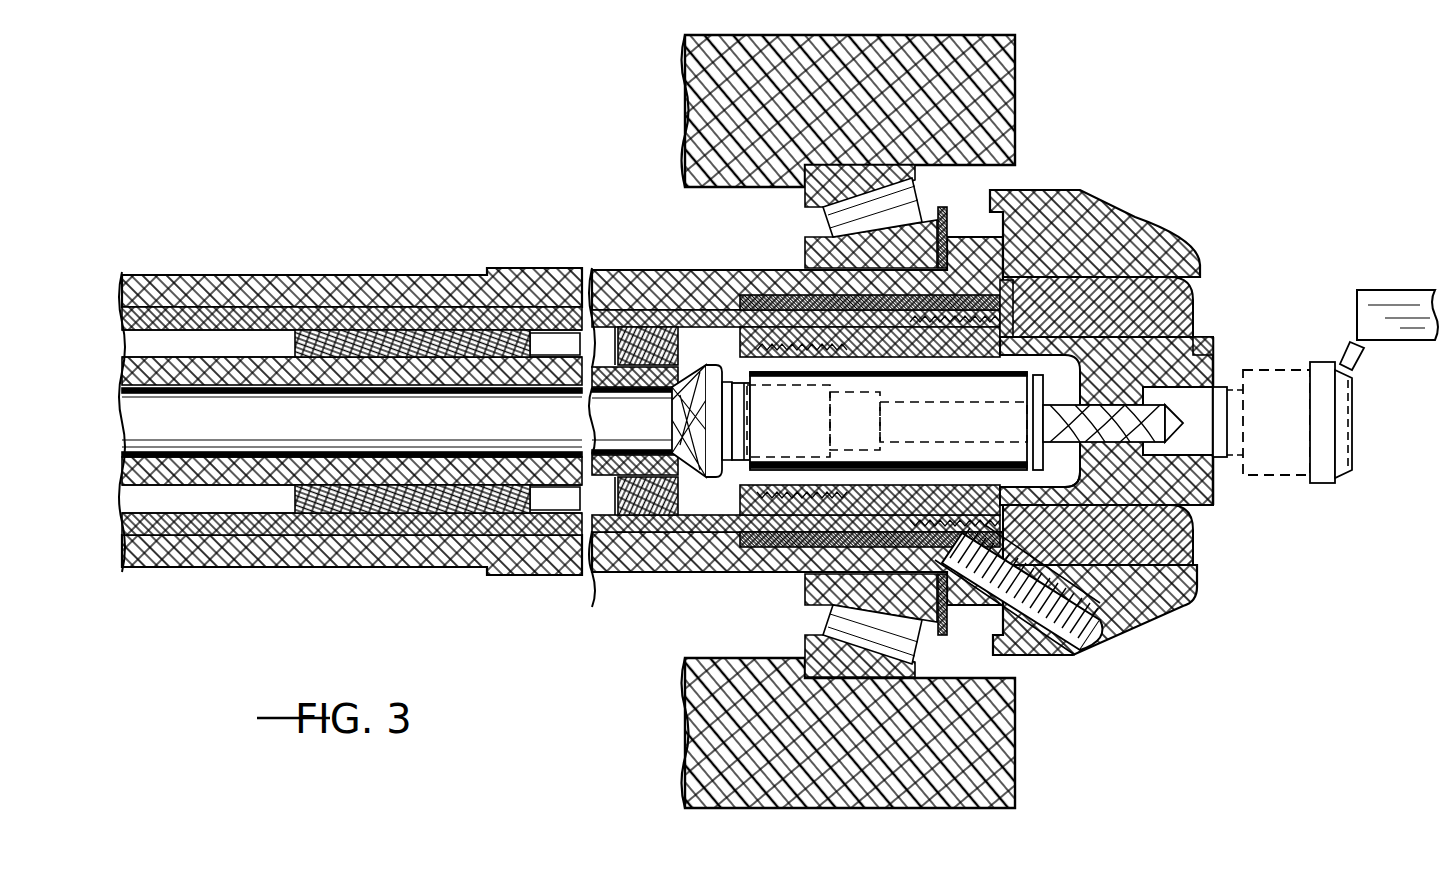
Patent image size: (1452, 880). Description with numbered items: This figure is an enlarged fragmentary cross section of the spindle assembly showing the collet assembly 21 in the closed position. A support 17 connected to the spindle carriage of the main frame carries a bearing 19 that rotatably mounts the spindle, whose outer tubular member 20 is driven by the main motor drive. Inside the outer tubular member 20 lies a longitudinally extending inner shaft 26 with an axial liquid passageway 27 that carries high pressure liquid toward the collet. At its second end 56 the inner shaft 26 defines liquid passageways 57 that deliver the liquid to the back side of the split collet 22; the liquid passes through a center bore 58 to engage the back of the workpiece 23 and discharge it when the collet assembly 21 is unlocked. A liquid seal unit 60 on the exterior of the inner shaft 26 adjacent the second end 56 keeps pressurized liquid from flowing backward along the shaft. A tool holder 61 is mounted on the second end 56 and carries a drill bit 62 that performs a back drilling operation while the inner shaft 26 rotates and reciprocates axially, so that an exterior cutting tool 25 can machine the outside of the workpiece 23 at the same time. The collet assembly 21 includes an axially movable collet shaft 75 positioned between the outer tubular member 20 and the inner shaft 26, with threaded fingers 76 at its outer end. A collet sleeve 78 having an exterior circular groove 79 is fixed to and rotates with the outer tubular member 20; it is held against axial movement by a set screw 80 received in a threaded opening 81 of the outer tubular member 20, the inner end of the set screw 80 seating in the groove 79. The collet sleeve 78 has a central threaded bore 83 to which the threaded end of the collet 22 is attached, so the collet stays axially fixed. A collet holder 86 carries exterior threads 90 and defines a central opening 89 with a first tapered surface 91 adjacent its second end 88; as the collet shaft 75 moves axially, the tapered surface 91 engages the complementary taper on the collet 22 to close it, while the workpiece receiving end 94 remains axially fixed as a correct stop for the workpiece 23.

The support 17 is at (1017, 48).
The bearing 19 is at (805, 203).
The outer tubular member 20 is at (680, 268).
The collet assembly 21 is at (1148, 275).
The split collet 22 is at (1222, 345).
The workpiece 23 is at (1298, 478).
The exterior cutting tool 25 is at (1343, 345).
The inner shaft 26 is at (423, 395).
The axial liquid passageway 27 is at (225, 450).
The second end 56 is at (690, 478).
The liquid passageways 57 is at (672, 412).
The center bore 58 is at (1132, 445).
The liquid seal unit 60 is at (640, 515).
The tool holder 61 is at (733, 478).
The drill bit 62 is at (1208, 495).
The collet shaft 75 is at (533, 270).
The threaded fingers 76 is at (947, 637).
The collet sleeve 78 is at (790, 582).
The exterior circular groove 79 is at (947, 352).
The set screw 80 is at (1035, 630).
The threaded opening 81 is at (1100, 648).
The central threaded bore 83 is at (778, 358).
The collet holder 86 is at (1093, 300).
The second end 88 is at (1200, 560).
The central opening 89 is at (1040, 337).
The exterior threads 90 is at (943, 343).
The first tapered surface 91 is at (1198, 330).
The workpiece receiving end 94 is at (1222, 365).